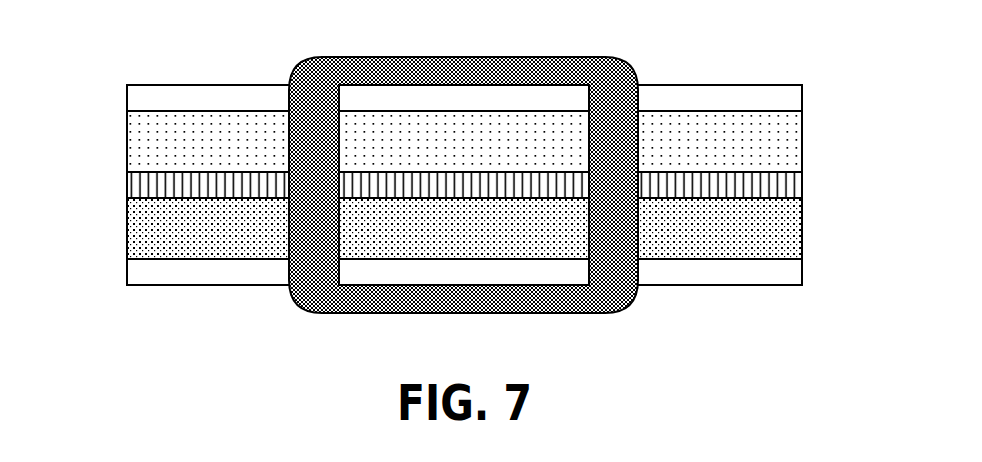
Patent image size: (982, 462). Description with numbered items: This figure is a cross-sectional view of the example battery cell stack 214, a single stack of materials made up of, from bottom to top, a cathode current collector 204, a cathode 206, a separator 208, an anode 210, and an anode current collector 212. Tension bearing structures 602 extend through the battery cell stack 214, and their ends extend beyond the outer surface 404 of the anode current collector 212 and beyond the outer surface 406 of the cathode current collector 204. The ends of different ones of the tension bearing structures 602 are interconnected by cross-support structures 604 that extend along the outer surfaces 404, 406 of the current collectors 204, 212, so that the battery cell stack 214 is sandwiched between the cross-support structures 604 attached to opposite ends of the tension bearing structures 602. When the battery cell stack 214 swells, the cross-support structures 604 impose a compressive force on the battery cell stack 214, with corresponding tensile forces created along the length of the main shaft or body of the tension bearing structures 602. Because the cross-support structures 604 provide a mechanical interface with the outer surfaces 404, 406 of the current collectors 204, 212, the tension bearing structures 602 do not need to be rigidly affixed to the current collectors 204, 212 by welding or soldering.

The cathode current collector 204 is at (793, 271).
The cathode 206 is at (793, 229).
The separator 208 is at (793, 184).
The anode 210 is at (793, 141).
The anode current collector 212 is at (793, 98).
The battery cell stack 214 is at (462, 185).
The outer surface 404 is at (173, 85).
The outer surface 406 is at (453, 301).
The tension bearing structures 602 is at (325, 162).
The cross-support structures 604 is at (382, 65).